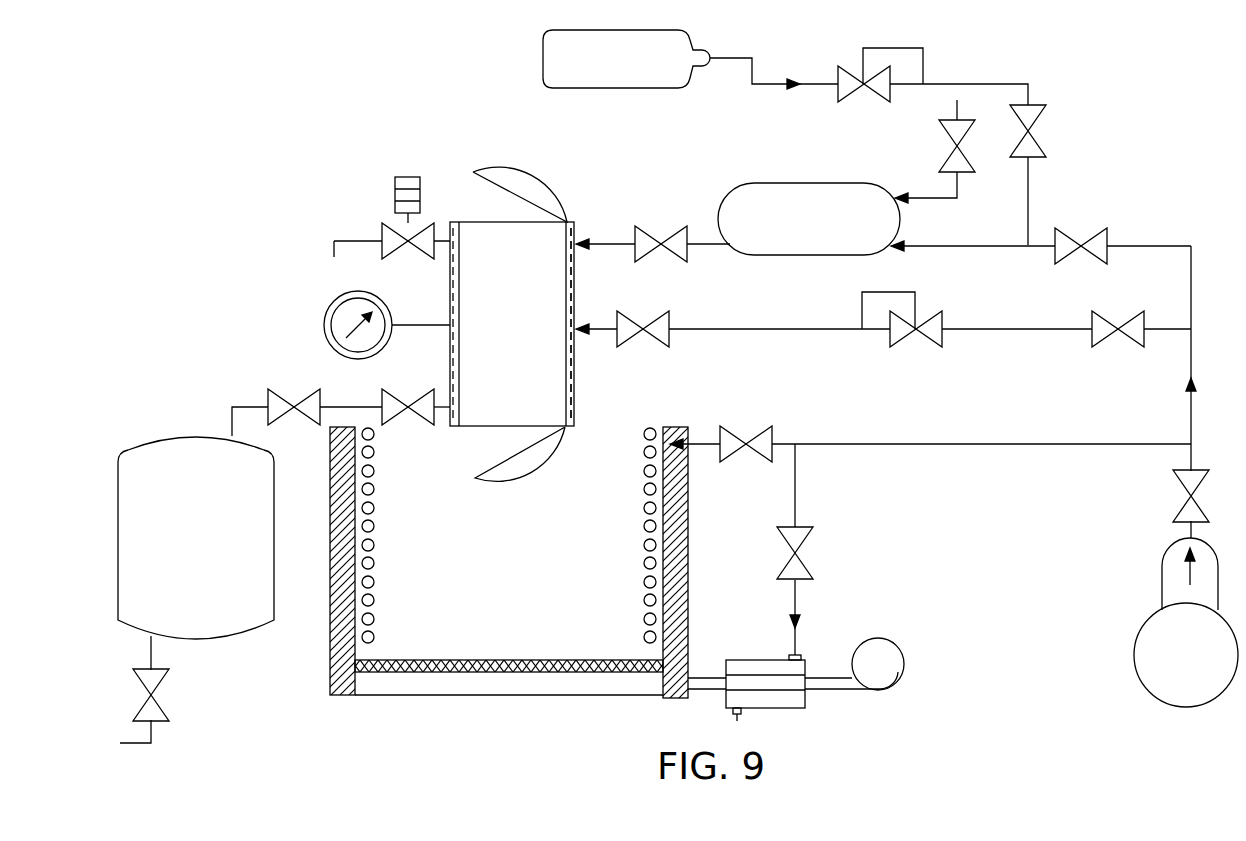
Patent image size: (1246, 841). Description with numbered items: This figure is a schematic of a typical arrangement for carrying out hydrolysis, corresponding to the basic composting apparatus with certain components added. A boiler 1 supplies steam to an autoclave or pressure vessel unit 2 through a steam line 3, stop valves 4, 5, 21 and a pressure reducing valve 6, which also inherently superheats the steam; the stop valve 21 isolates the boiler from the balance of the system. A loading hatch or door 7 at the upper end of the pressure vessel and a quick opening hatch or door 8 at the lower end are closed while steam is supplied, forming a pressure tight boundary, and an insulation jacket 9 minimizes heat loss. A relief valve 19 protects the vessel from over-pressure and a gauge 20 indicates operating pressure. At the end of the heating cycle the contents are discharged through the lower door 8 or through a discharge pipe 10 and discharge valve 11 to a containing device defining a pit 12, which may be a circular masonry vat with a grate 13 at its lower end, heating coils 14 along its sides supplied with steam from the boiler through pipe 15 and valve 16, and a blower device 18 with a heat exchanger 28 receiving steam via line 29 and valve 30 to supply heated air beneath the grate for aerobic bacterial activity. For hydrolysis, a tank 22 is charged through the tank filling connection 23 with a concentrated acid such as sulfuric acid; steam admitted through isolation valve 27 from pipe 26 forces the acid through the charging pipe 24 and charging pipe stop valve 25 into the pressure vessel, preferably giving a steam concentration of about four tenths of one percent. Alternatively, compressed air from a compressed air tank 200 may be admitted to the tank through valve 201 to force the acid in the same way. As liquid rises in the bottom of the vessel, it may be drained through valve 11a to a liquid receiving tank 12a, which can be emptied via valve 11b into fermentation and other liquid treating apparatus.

The compressed air tank 200 is at (616, 82).
The valve 201 is at (1034, 130).
The tank filling connection 23 is at (948, 148).
The tank 22 is at (808, 184).
The charging pipe 24 is at (600, 240).
The charging pipe stop valve 25 is at (661, 240).
The isolation valve 27 is at (1072, 240).
The pipe 26 is at (1193, 294).
The stop valve 5 is at (632, 322).
The pressure reducing valve 6 is at (916, 304).
The steam line 3 is at (1027, 326).
The stop valve 4 is at (1114, 324).
The pressure vessel unit 2 is at (576, 386).
The insulation jacket 9 is at (575, 290).
The loading hatch or door 7 is at (536, 180).
The quick opening hatch or door 8 is at (528, 478).
The relief valve 19 is at (388, 233).
The gauge 20 is at (386, 302).
The valve 11a is at (296, 398).
The discharge valve 11 is at (403, 399).
The discharge pipe 10 is at (444, 424).
The liquid receiving tank 12a is at (248, 636).
The valve 11b is at (160, 690).
The pit 12 is at (330, 550).
The heating coils 14 is at (645, 540).
The grate 13 is at (484, 658).
The pipe 15 is at (704, 438).
The valve 16 is at (738, 434).
The line 29 is at (800, 482).
The valve 30 is at (808, 546).
The heat exchanger 28 is at (748, 658).
The blower device 18 is at (892, 640).
The stop valve 21 is at (1198, 480).
The boiler 1 is at (1162, 588).